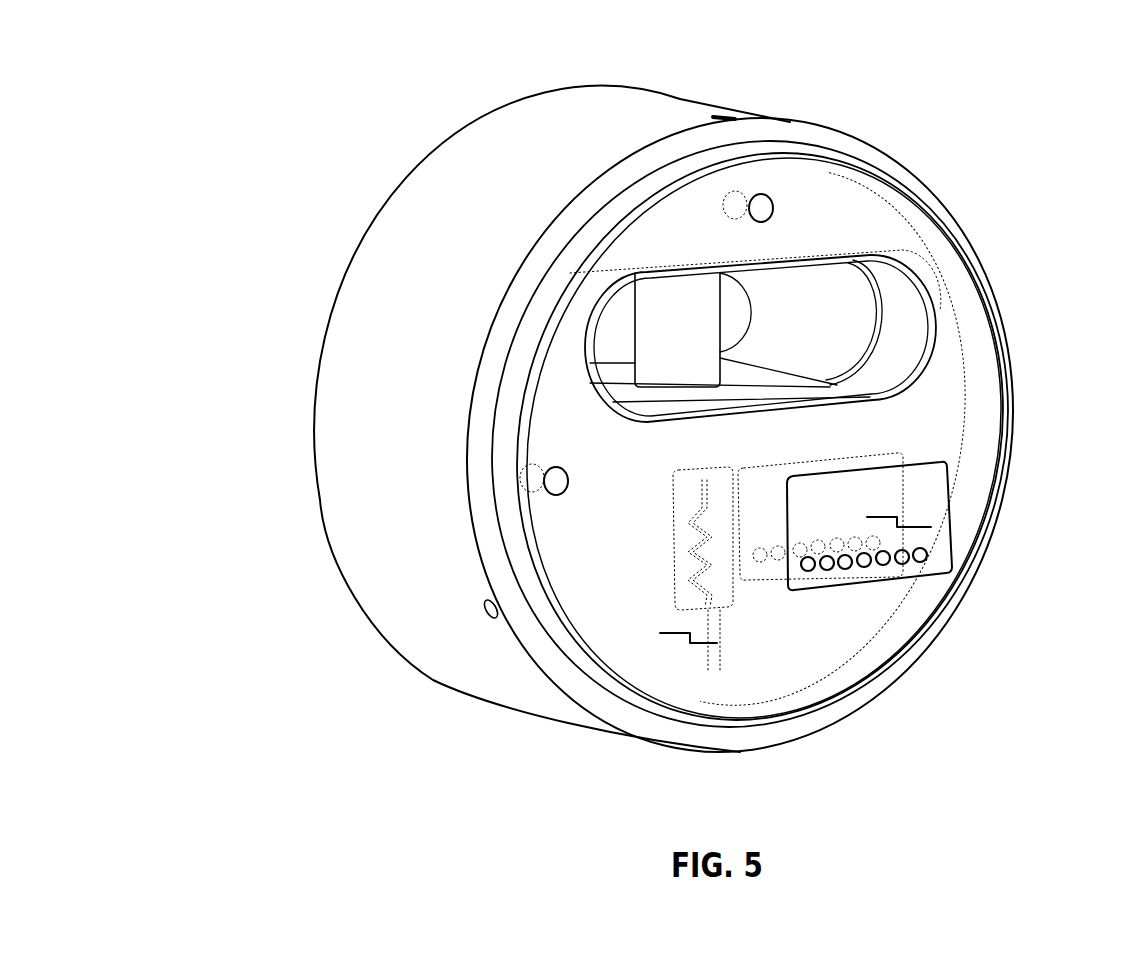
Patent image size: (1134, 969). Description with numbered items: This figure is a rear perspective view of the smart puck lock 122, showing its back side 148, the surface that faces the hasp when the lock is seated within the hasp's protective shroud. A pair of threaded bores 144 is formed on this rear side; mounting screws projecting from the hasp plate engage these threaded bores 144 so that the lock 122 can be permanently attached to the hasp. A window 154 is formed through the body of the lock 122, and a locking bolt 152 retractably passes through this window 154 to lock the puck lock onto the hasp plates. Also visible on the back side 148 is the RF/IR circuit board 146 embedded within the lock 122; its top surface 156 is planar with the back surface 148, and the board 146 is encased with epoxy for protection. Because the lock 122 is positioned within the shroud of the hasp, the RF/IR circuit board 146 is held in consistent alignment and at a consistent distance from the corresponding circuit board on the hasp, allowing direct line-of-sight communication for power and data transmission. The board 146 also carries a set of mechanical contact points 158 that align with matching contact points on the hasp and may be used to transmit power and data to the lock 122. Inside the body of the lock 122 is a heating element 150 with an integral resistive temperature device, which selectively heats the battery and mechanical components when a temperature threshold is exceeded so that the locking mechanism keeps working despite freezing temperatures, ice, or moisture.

The smart puck lock 122 is at (475, 142).
The threaded bores 144 is at (762, 204).
The RF/IR circuit board 146 is at (953, 492).
The back side 148 is at (682, 655).
The heating element 150 is at (678, 560).
The locking bolt 152 is at (695, 332).
The window 154 is at (843, 322).
The top surface 156 is at (936, 534).
The mechanical contact points 158 is at (872, 568).